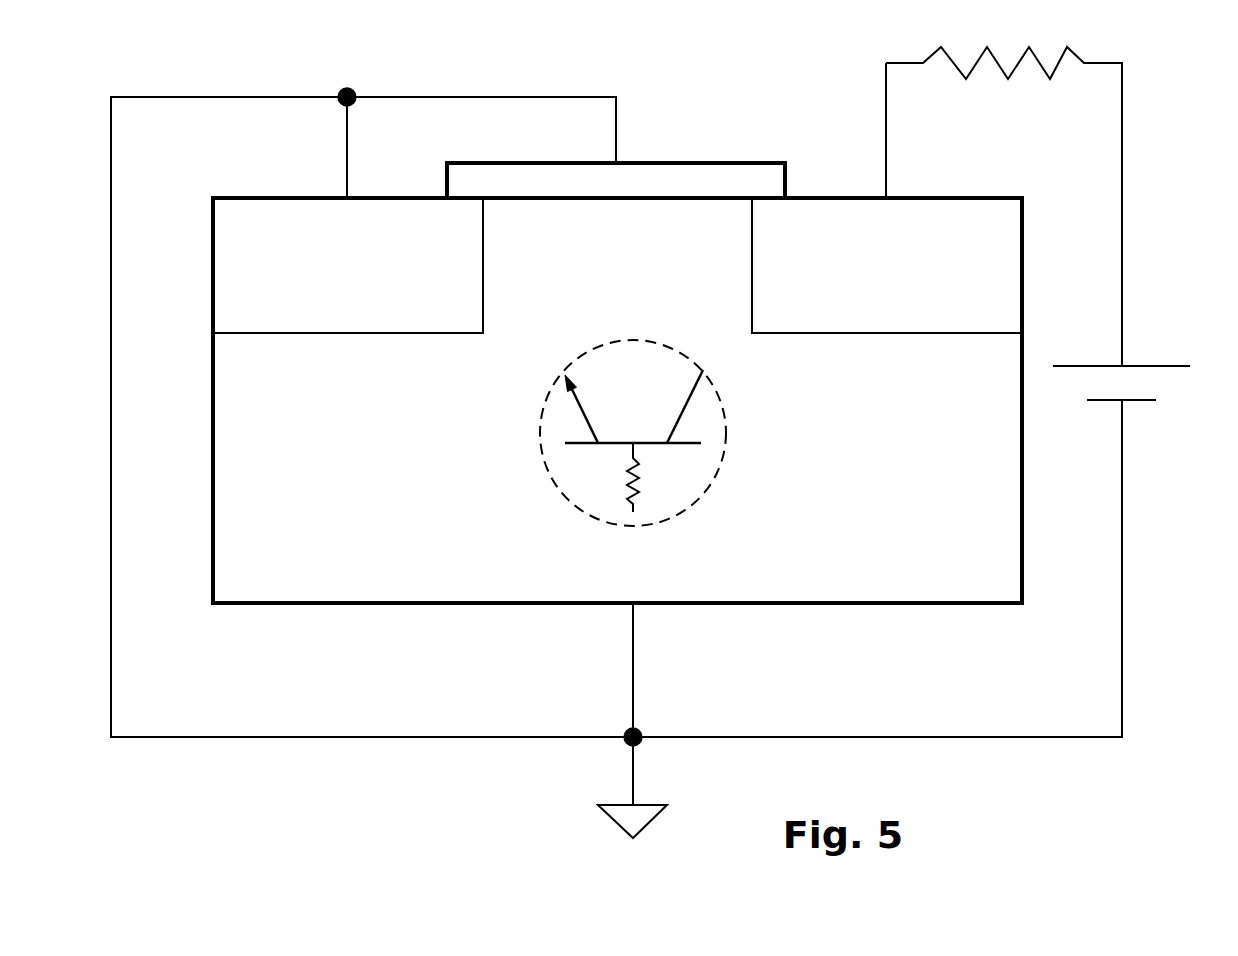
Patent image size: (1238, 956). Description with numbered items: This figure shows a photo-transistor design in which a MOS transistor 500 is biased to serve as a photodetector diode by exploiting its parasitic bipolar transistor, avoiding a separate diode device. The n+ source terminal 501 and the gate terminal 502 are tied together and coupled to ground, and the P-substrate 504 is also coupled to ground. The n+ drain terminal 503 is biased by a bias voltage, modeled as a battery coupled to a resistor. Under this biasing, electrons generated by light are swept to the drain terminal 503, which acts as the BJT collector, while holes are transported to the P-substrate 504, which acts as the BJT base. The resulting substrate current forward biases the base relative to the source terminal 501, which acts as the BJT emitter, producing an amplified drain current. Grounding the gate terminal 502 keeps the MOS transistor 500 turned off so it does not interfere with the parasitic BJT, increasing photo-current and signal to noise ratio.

The MOS transistor 500 is at (683, 43).
The source terminal 501 is at (348, 265).
The gate terminal 502 is at (616, 180).
The drain terminal 503 is at (887, 265).
The P-substrate 504 is at (617, 400).